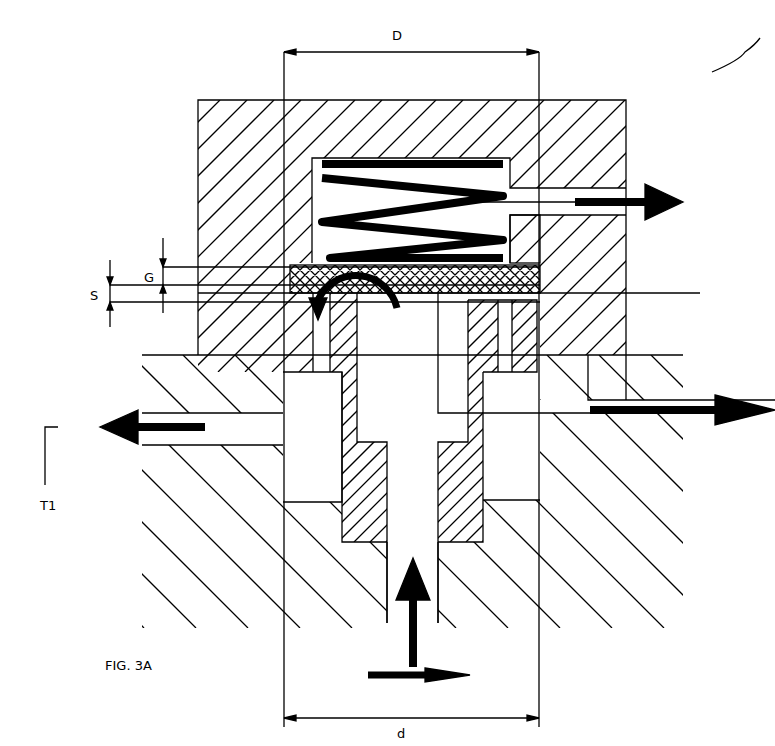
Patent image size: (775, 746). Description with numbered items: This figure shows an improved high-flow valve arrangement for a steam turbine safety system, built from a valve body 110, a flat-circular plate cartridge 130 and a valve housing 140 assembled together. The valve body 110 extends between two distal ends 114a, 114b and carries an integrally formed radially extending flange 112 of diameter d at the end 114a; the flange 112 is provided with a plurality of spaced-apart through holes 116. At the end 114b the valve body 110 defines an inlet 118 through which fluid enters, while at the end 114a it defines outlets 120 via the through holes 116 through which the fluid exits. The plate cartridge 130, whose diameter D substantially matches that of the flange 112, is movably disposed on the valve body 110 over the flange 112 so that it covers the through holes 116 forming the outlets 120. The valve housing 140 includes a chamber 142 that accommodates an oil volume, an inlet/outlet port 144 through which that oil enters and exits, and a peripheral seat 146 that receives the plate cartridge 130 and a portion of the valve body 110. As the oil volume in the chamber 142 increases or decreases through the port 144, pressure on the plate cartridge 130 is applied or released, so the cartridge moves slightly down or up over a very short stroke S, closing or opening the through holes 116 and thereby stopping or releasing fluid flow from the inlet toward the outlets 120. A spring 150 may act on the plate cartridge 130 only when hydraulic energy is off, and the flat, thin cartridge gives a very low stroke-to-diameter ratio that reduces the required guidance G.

The valve body 110 is at (483, 543).
The radially extending flange 112 is at (577, 413).
The distal end of valve body 114a is at (440, 627).
The distal end of valve body 114b is at (198, 358).
The spaced-apart through holes 116 is at (507, 375).
The inlet 118 is at (407, 655).
The outlets 120 is at (300, 296).
The flat-circular plate cartridge 130 is at (300, 266).
The valve housing 140 is at (197, 102).
The chamber 142 is at (315, 165).
The inlet/outlet port 144 is at (645, 182).
The peripheral seat 146 is at (628, 265).
The spring 150 is at (318, 185).